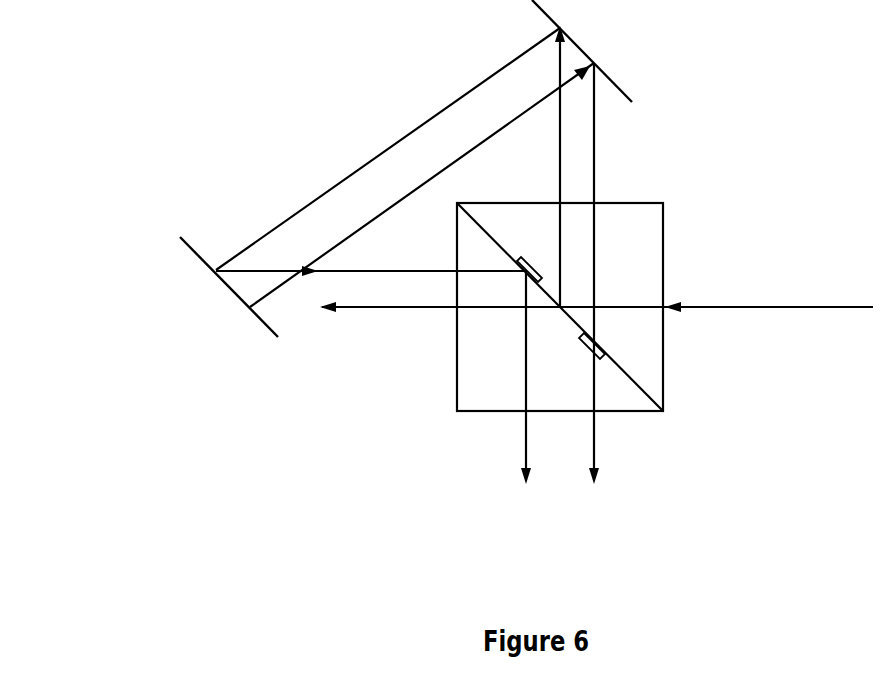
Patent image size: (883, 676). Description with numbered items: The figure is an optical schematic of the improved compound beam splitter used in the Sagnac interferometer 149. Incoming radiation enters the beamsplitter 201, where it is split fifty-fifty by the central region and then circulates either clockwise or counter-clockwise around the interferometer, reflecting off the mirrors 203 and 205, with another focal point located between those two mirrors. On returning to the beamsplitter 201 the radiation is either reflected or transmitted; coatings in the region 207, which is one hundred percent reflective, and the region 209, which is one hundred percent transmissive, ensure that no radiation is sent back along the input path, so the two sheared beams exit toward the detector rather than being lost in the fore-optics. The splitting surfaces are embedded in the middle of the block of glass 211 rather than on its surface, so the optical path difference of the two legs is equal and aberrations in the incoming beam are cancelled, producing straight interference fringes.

The Sagnac interferometer 149 is at (300, 84).
The beamsplitter 201 is at (674, 245).
The mirror 203 is at (592, 40).
The mirror 205 is at (233, 293).
The reflective coating region 207 is at (532, 267).
The transmissive coating region 209 is at (589, 345).
The block of glass 211 is at (642, 354).